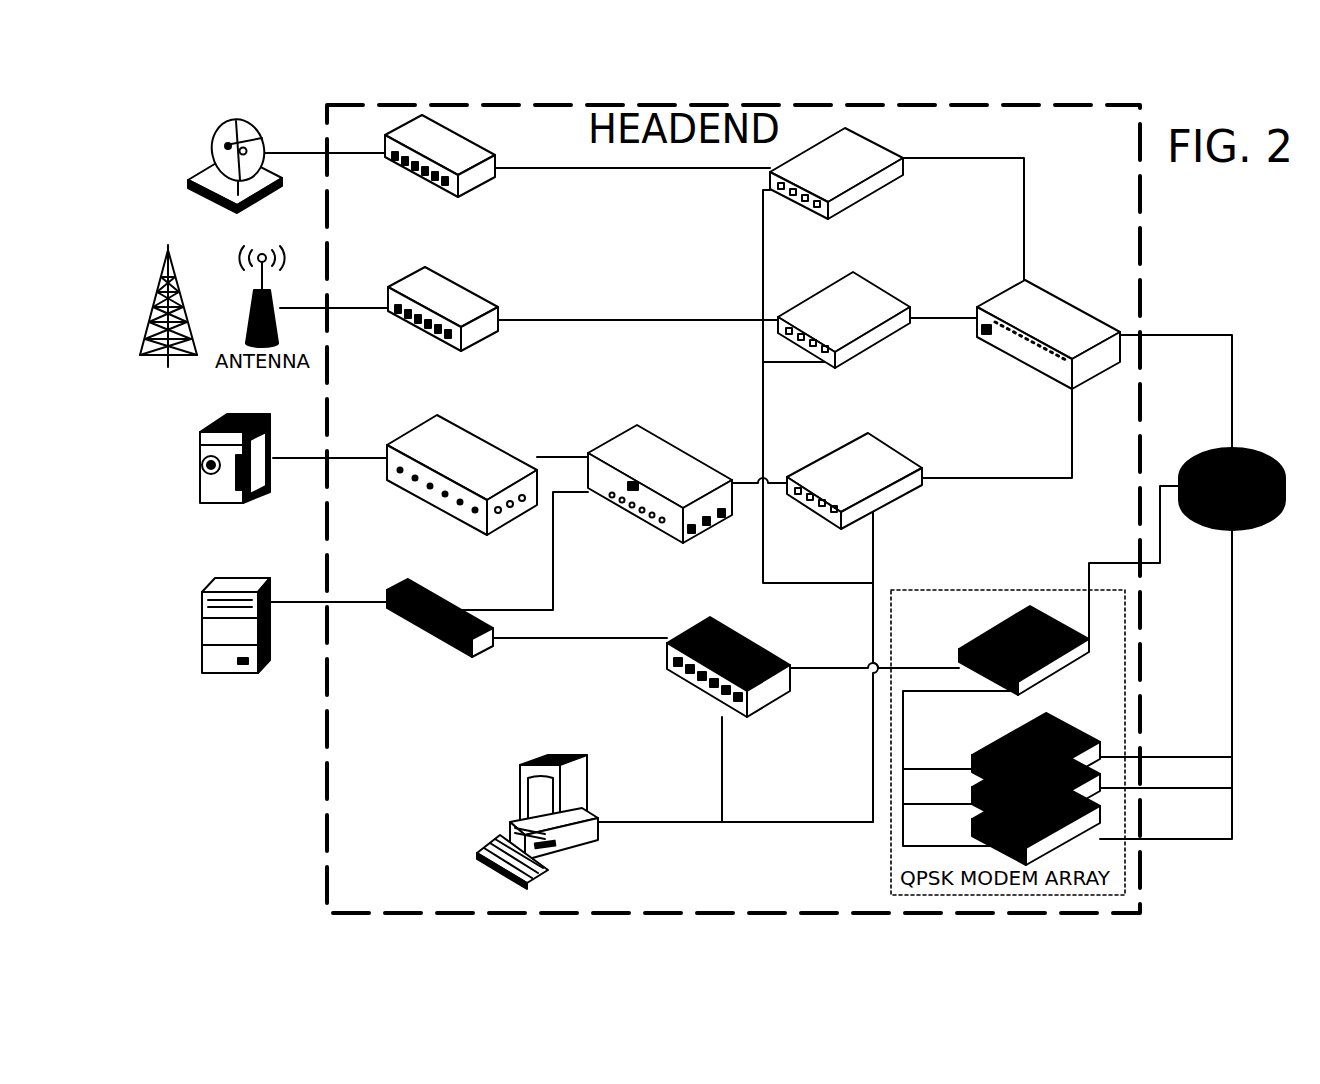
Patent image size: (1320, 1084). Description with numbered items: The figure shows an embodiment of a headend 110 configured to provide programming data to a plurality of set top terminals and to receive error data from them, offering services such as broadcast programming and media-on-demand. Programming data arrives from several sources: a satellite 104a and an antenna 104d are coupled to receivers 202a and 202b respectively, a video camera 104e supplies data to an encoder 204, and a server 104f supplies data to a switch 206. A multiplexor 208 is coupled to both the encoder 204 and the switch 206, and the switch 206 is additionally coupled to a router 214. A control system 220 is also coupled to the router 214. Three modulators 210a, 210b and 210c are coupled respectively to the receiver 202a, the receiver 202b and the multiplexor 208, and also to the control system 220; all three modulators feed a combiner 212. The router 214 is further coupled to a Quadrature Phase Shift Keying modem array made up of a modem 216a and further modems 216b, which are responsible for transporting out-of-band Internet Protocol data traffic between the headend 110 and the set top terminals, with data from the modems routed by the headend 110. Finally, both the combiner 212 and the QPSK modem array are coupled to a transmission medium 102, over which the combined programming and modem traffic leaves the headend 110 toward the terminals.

The headend 110 is at (1205, 237).
The transmission medium 102 is at (1230, 488).
The satellite 104a is at (190, 180).
The antenna 104d is at (182, 405).
The video camera 104e is at (197, 481).
The server 104f is at (203, 613).
The receiver 202a is at (477, 143).
The receiver 202b is at (468, 290).
The encoder 204 is at (482, 440).
The switch 206 is at (400, 613).
The multiplexor 208 is at (648, 432).
The modulator 210a is at (888, 152).
The modulator 210b is at (897, 296).
The modulator 210c is at (883, 444).
The combiner 212 is at (1042, 290).
The router 214 is at (762, 648).
The modem 216a is at (978, 642).
The modems 216b is at (980, 729).
The control system 220 is at (553, 763).